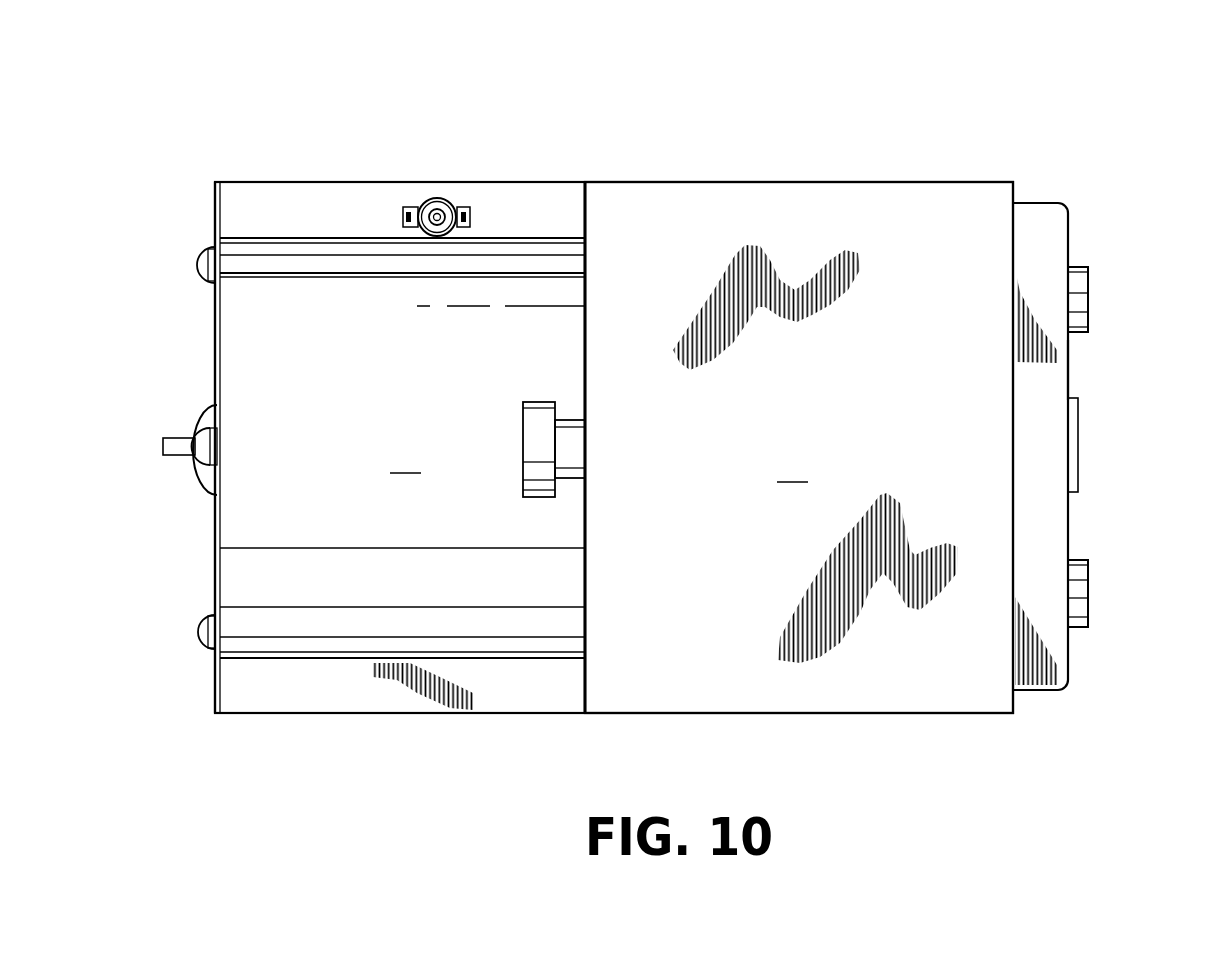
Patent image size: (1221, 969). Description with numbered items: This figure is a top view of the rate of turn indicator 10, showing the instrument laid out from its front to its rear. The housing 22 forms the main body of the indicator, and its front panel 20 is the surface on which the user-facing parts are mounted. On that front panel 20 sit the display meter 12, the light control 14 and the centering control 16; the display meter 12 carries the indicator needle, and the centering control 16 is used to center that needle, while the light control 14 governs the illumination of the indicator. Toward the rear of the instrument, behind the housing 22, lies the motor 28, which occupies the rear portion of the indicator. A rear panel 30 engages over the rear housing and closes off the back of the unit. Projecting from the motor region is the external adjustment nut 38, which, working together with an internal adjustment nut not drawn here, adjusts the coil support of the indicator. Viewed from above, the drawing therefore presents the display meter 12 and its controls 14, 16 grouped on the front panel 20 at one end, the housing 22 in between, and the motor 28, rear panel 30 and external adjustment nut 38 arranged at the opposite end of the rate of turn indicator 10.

The rate of turn indicator 10 is at (828, 84).
The display meter 12 is at (1047, 534).
The light control 14 is at (1088, 591).
The centering control 16 is at (1088, 287).
The front panel 20 is at (1070, 368).
The housing 22 is at (799, 447).
The motor 28 is at (443, 211).
The rear panel 30 is at (212, 347).
The external adjustment nut 38 is at (533, 443).